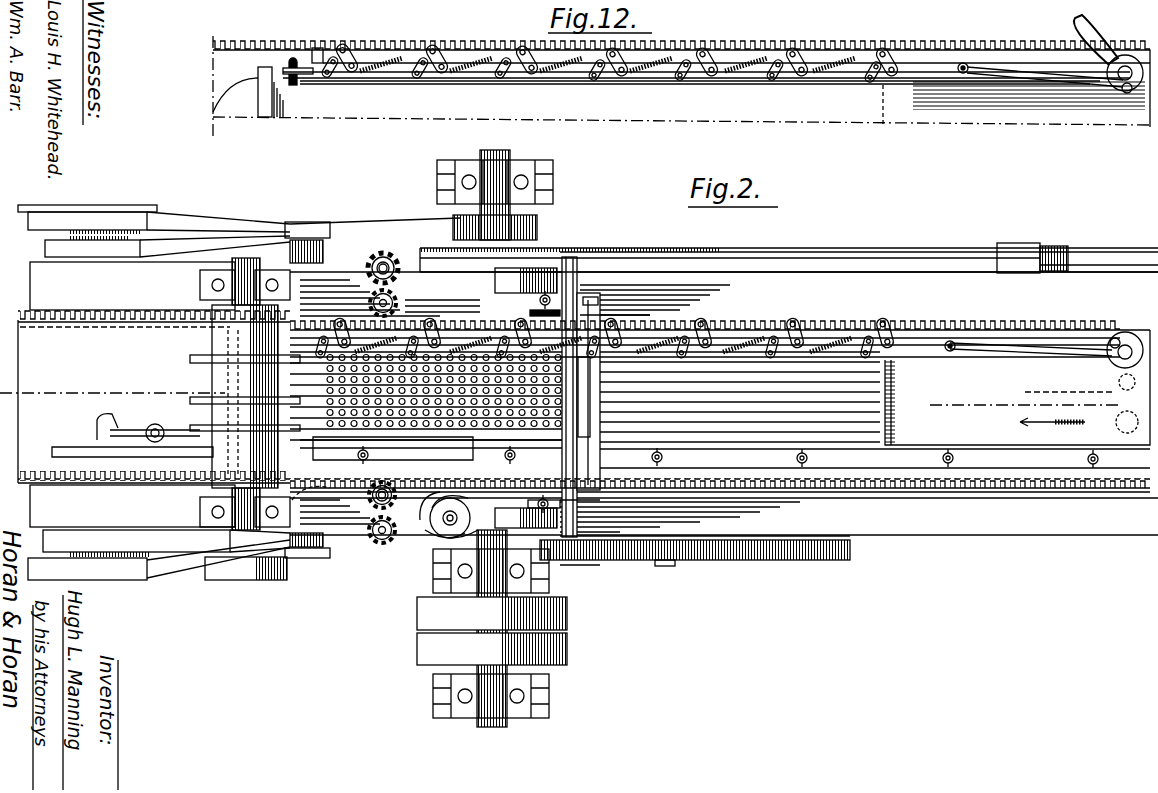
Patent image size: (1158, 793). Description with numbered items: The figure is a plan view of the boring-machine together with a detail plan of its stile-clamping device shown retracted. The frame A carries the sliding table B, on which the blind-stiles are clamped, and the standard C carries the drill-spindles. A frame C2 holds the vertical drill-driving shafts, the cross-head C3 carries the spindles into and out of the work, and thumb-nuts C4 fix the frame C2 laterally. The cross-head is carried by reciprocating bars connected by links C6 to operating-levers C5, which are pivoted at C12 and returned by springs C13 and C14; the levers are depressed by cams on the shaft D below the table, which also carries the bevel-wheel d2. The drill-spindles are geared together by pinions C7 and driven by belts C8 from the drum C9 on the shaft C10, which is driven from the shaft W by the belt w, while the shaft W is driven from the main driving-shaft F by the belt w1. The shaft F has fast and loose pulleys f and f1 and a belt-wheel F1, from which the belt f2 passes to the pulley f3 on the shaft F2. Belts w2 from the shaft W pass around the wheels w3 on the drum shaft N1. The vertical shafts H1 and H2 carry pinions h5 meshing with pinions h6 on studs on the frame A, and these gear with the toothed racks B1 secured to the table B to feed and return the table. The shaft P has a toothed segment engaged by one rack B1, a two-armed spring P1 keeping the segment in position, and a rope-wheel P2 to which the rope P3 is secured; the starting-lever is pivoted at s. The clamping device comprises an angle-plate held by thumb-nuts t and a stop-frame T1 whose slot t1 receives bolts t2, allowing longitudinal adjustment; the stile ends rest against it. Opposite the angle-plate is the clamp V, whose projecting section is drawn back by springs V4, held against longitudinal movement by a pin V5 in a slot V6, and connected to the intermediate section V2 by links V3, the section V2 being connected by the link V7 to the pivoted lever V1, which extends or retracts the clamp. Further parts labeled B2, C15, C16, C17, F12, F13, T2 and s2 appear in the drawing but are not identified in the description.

In FIG. 2, the frame A is at (588, 398).
In FIG. 12, the sliding table B is at (681, 102).
In FIG. 2, the sliding table B is at (1017, 387).
In FIG. 12, the toothed racks B1 is at (1002, 52).
In FIG. 2, the toothed racks B1 is at (805, 325).
In FIG. 2, the lower carriage rack bar B2 is at (748, 487).
In FIG. 2, the standard C is at (547, 397).
In FIG. 2, the frame C2 is at (600, 394).
In FIG. 2, the cross-head C3 is at (740, 411).
In FIG. 2, the thumb-nuts C4 is at (740, 393).
In FIG. 2, the operating-levers C5 is at (740, 418).
In FIG. 2, the links or connecting-rods C6 is at (590, 416).
In FIG. 2, the pinions C7 is at (740, 387).
In FIG. 2, the belts C8 is at (212, 360).
In FIG. 2, the drum C9 is at (222, 343).
In FIG. 2, the shaft C10 is at (244, 262).
In FIG. 2, the pivot C12 is at (605, 409).
In FIG. 2, the spring C13 is at (519, 498).
In FIG. 2, the spring C14 is at (548, 498).
In FIG. 2, the bolt C15 is at (538, 302).
In FIG. 2, the block C16 is at (600, 303).
In FIG. 2, the block C17 is at (560, 296).
In FIG. 2, the shaft D is at (680, 566).
In FIG. 2, the bevel-wheel d2 is at (852, 561).
In FIG. 2, the main driving-shaft F is at (492, 730).
In FIG. 2, the belt-wheel F1 is at (498, 152).
In FIG. 2, the bar F12 is at (562, 250).
In FIG. 2, the bearing F13 is at (563, 568).
In FIG. 2, the shaft F2 is at (1022, 243).
In FIG. 2, the fast pulley f is at (417, 648).
In FIG. 2, the loose pulley f1 is at (417, 613).
In FIG. 2, the belt f2 is at (641, 253).
In FIG. 2, the pulley f3 is at (1058, 246).
In FIG. 2, the vertical shaft H1 is at (372, 262).
In FIG. 2, the vertical shaft H2 is at (375, 558).
In FIG. 2, the pinions h5 is at (394, 258).
In FIG. 2, the pinions h6 is at (368, 304).
In FIG. 2, the shaft N1 is at (305, 232).
In FIG. 2, the shaft P is at (440, 545).
In FIG. 2, the two-armed spring P1 is at (425, 540).
In FIG. 2, the rope-wheel P2 is at (462, 545).
In FIG. 2, the rope P3 is at (371, 497).
In FIG. 2, the stop-frame T1 is at (160, 425).
In FIG. 12, the stop block T2 is at (248, 92).
In FIG. 2, the thumb-nuts t is at (956, 460).
In FIG. 2, the slot t1 is at (110, 433).
In FIG. 2, the bolts t2 is at (148, 441).
In FIG. 12, the clamp V is at (873, 40).
In FIG. 2, the clamp V is at (903, 332).
In FIG. 12, the pivoted lever V1 is at (1132, 56).
In FIG. 2, the pivoted lever V1 is at (1110, 362).
In FIG. 12, the clamp section V2 is at (910, 76).
In FIG. 2, the clamp section V2 is at (908, 358).
In FIG. 12, the links V3 is at (800, 72).
In FIG. 2, the links V3 is at (880, 324).
In FIG. 12, the springs V4 is at (746, 53).
In FIG. 2, the springs V4 is at (748, 326).
In FIG. 12, the pin V5 is at (286, 66).
In FIG. 12, the slot V6 is at (292, 84).
In FIG. 12, the link V7 is at (1072, 82).
In FIG. 2, the link V7 is at (1017, 340).
In FIG. 2, the shaft W is at (92, 210).
In FIG. 2, the belt w is at (190, 570).
In FIG. 2, the belt w1 is at (288, 226).
In FIG. 2, the belts w2 is at (188, 238).
In FIG. 2, the wheels w3 is at (313, 403).
In FIG. 2, the pivot s is at (1118, 422).
In FIG. 2, the stop rod s2 is at (1070, 382).